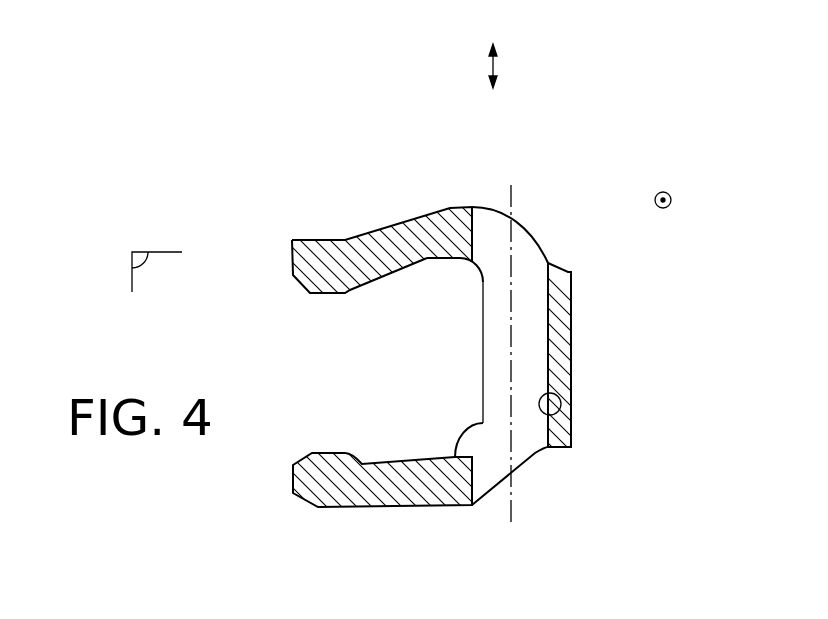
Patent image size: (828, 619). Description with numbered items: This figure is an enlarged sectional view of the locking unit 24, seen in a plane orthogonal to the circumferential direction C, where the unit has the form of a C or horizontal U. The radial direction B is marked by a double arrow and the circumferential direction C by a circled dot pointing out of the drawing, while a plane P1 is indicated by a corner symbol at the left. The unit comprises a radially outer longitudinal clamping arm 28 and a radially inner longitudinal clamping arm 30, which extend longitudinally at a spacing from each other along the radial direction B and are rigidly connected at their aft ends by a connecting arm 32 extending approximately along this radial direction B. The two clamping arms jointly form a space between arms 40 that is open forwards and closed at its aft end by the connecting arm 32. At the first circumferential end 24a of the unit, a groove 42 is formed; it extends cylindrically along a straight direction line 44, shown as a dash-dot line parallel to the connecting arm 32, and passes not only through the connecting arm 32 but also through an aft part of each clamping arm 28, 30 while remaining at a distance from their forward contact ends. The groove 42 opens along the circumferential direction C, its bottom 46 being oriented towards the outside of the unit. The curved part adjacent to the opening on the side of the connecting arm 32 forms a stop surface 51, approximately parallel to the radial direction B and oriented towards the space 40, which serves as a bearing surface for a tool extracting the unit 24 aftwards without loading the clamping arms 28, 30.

The locking unit 24 is at (313, 226).
The first circumferential end 24a is at (450, 202).
The radially outer longitudinal clamping arm 28 is at (363, 248).
The radially inner longitudinal clamping arm 30 is at (355, 490).
The connecting arm 32 is at (558, 360).
The space between arms 40 is at (424, 378).
The groove 42 is at (527, 273).
The straight direction line 44 is at (513, 190).
The bottom of the groove 46 is at (535, 305).
The stop surface 51 is at (560, 412).
The radial direction B is at (496, 62).
The circumferential direction C is at (672, 196).
The reference plane P1 is at (143, 257).